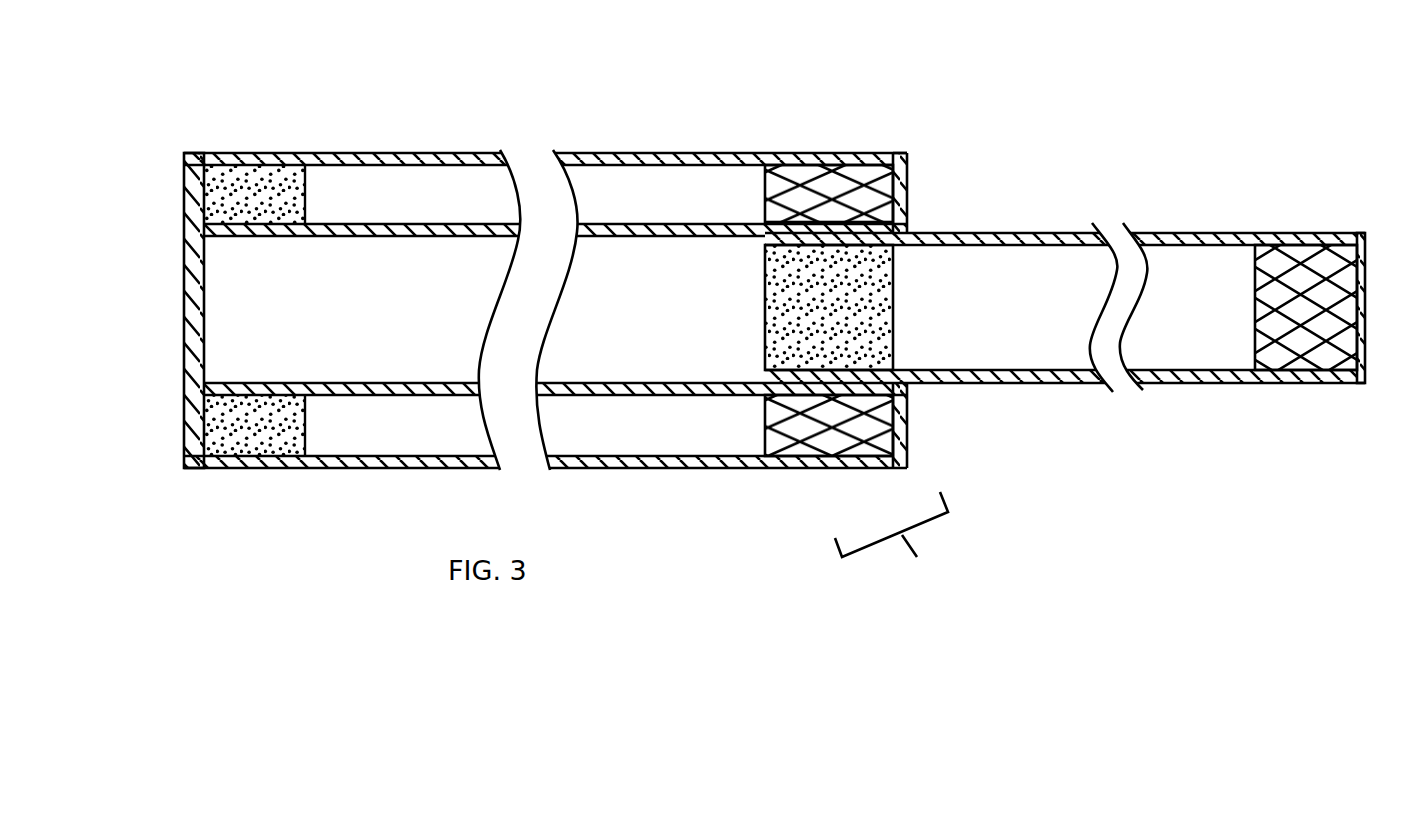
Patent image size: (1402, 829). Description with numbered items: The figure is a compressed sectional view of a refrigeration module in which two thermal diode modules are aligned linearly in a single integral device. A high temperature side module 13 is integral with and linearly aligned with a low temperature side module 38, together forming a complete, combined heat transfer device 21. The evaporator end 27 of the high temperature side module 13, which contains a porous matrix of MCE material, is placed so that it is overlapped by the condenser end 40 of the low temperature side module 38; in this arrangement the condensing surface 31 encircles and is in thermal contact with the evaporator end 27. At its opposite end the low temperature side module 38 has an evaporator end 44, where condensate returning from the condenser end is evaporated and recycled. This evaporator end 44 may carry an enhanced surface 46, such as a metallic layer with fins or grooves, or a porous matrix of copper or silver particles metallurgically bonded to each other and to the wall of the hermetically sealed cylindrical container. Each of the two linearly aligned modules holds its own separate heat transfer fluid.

The high temperature side module 13 is at (1035, 233).
The combined heat transfer device 21 is at (891, 545).
The evaporator end 27 is at (853, 270).
The condensing surface 31 is at (808, 437).
The low temperature side module 38 is at (640, 195).
The condenser end 40 is at (842, 183).
The evaporator end 44 is at (187, 195).
The enhanced surface 46 is at (267, 190).